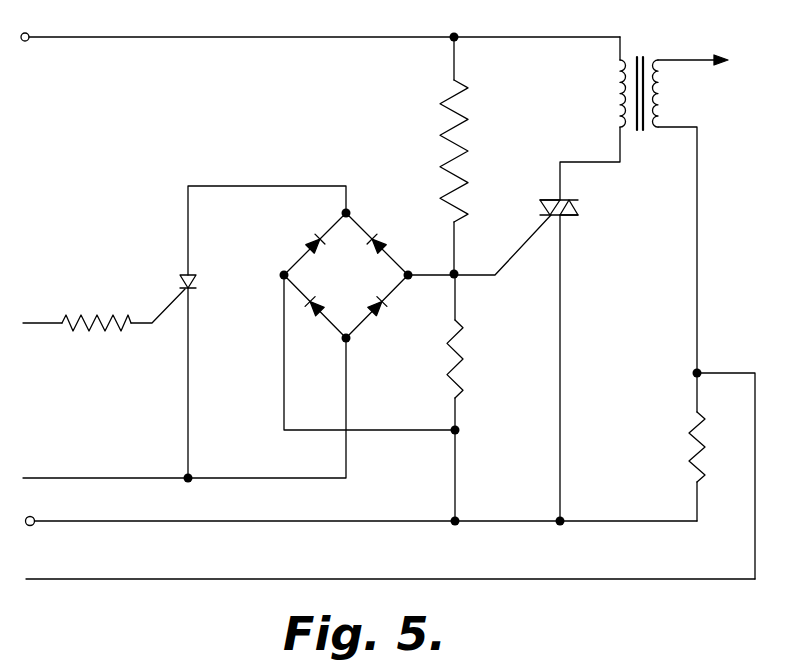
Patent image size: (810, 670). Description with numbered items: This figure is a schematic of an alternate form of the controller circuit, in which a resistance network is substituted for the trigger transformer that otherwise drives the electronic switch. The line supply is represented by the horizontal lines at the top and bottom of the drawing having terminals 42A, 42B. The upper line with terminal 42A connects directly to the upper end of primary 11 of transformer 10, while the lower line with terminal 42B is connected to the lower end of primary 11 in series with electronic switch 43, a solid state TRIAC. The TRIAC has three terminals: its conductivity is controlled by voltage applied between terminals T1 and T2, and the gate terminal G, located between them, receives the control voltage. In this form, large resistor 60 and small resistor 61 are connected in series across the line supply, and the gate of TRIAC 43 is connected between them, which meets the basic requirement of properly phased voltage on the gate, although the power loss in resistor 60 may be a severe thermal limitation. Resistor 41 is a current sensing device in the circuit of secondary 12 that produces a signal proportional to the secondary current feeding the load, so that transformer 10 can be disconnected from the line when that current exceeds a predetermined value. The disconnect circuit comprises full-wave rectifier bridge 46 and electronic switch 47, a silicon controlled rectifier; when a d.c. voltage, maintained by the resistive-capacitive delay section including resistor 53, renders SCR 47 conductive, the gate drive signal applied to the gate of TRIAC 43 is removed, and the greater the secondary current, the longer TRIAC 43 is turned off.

The transformer 10 is at (671, 77).
The primary 11 is at (620, 92).
The secondary 12 is at (660, 93).
The resistor 41 is at (700, 450).
The terminal 42A is at (320, 27).
The terminal 42B is at (362, 512).
The electronic switch 43 is at (565, 200).
The full-wave rectifier bridge 46 is at (346, 275).
The electronic switch 47 is at (197, 273).
The resistor 53 is at (98, 313).
The large resistor 60 is at (468, 152).
The small resistor 61 is at (465, 362).
The terminal T1 is at (561, 217).
The terminal T2 is at (557, 199).
The terminal G is at (552, 218).